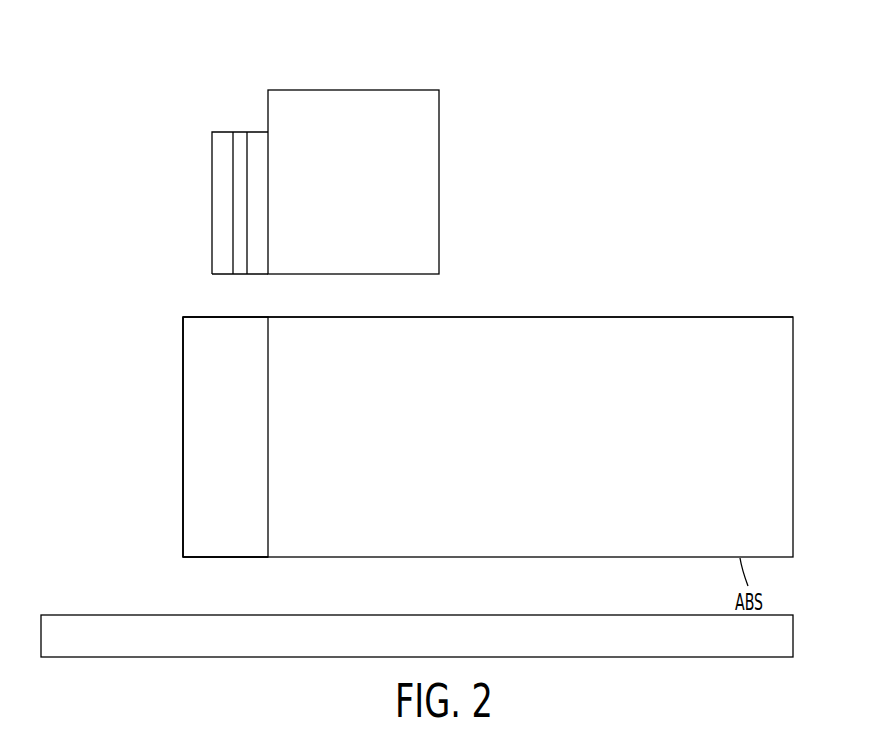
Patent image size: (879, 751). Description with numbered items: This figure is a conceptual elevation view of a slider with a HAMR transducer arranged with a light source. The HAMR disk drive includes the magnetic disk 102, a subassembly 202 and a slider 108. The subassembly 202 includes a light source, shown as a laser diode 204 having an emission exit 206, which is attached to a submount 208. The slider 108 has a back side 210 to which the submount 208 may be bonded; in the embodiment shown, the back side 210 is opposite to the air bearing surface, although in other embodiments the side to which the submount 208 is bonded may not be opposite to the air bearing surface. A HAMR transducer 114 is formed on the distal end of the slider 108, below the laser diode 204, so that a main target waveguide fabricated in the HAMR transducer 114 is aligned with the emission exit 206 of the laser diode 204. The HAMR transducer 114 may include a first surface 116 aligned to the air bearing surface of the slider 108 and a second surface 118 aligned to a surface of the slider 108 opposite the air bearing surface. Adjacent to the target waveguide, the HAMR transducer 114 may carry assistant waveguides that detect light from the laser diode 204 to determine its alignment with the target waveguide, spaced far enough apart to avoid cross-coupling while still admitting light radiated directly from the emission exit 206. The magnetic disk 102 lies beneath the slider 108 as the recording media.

The subassembly 202 is at (161, 86).
The laser diode 204 is at (218, 208).
The emission exit 206 is at (236, 275).
The submount 208 is at (432, 193).
The back side 210 is at (577, 317).
The slider 108 is at (786, 440).
The HAMR transducer 114 is at (190, 440).
The second surface 118 is at (200, 317).
The first surface 116 is at (232, 558).
The magnetic disk 102 is at (158, 614).